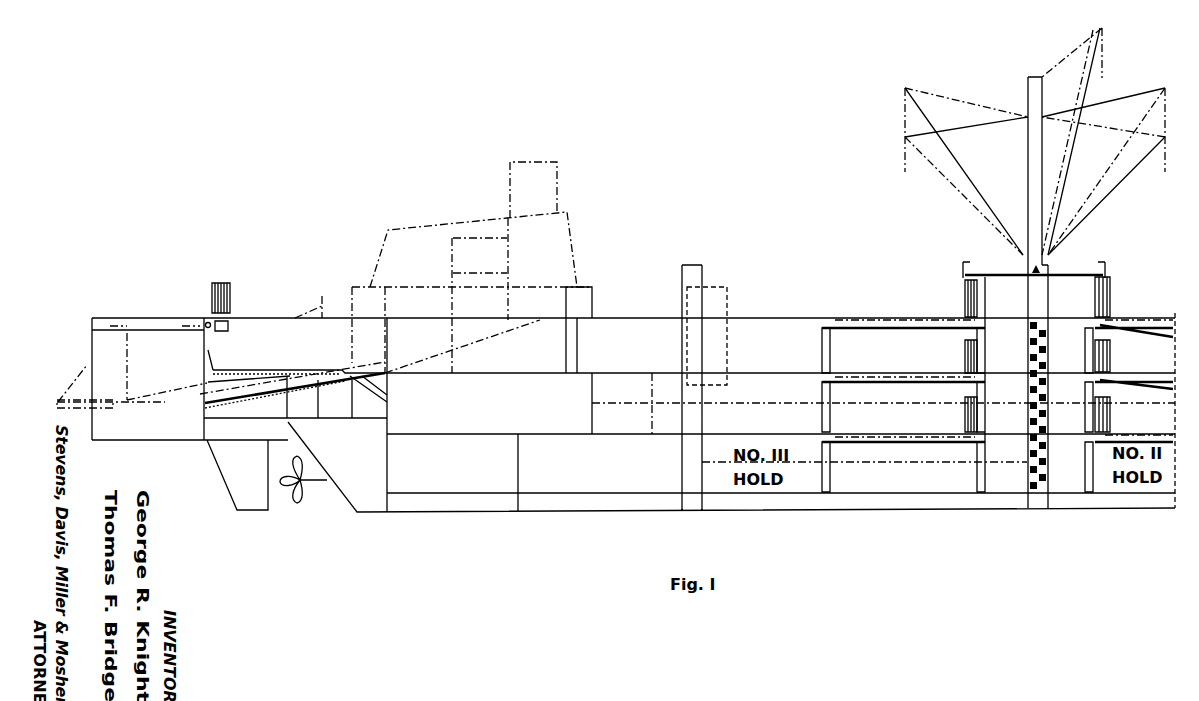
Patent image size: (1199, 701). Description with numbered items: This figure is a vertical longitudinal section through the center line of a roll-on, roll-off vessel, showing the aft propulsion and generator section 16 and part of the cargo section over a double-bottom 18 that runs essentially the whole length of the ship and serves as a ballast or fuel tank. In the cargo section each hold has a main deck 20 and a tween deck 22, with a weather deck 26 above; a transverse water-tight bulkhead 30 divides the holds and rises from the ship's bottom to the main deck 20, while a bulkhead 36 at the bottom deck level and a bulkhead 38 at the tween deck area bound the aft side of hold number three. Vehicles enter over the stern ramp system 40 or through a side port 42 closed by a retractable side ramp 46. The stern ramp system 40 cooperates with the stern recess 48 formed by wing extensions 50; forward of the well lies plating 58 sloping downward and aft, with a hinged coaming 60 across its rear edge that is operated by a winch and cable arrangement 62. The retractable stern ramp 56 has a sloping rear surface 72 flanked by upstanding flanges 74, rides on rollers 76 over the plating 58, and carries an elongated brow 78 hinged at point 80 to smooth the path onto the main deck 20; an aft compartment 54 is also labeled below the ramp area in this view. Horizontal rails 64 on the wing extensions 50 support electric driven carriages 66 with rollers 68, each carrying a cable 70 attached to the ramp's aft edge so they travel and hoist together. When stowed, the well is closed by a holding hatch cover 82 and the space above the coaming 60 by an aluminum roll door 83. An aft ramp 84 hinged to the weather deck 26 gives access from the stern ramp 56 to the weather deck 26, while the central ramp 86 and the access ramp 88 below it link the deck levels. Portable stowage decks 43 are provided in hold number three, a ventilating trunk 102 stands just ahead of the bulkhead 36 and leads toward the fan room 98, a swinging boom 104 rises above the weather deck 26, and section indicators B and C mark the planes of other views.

The aft propulsion and generator section 16 is at (573, 317).
The double-bottom 18 is at (905, 498).
The main deck 20 is at (873, 370).
The tween deck 22 is at (902, 433).
The weather deck 26 is at (803, 313).
The transverse water-tight bulkhead 30 is at (1050, 480).
The transverse bulkhead 36 is at (682, 478).
The bulkhead 38 is at (590, 413).
The stern ramp system 40 is at (297, 378).
The side port 42 is at (717, 330).
The portable stowage deck 43 is at (838, 403).
The retractable side ramp 46 is at (710, 292).
The stern recess 48 is at (265, 330).
The wing extension 50 is at (110, 318).
The stern compartment 54 is at (342, 403).
The retractable stern ramp 56 is at (292, 363).
The plating 58 is at (278, 396).
The coaming 60 is at (200, 387).
The winch and cable arrangement 62 is at (219, 294).
The horizontal rail 64 is at (150, 320).
The electric driven carriage 66 is at (192, 320).
The roller 68 is at (177, 335).
The cable 70 is at (203, 335).
The rear surface 72 is at (245, 368).
The upstanding flange 74 is at (222, 370).
The rollers 76 is at (388, 390).
The elongated brow 78 is at (390, 367).
The hinge point 80 is at (335, 367).
The holding hatch cover 82 is at (233, 288).
The aluminum roll door 83 is at (224, 337).
The main deck to weather deck ramp 84 is at (508, 324).
The ramp 86 is at (1133, 328).
The access ramp 88 is at (1163, 383).
The fan room 98 is at (1010, 290).
The ventilating trunk 102 is at (693, 275).
The swinging boom 104 is at (1025, 78).
The section B is at (1155, 310).
The section C is at (855, 312).